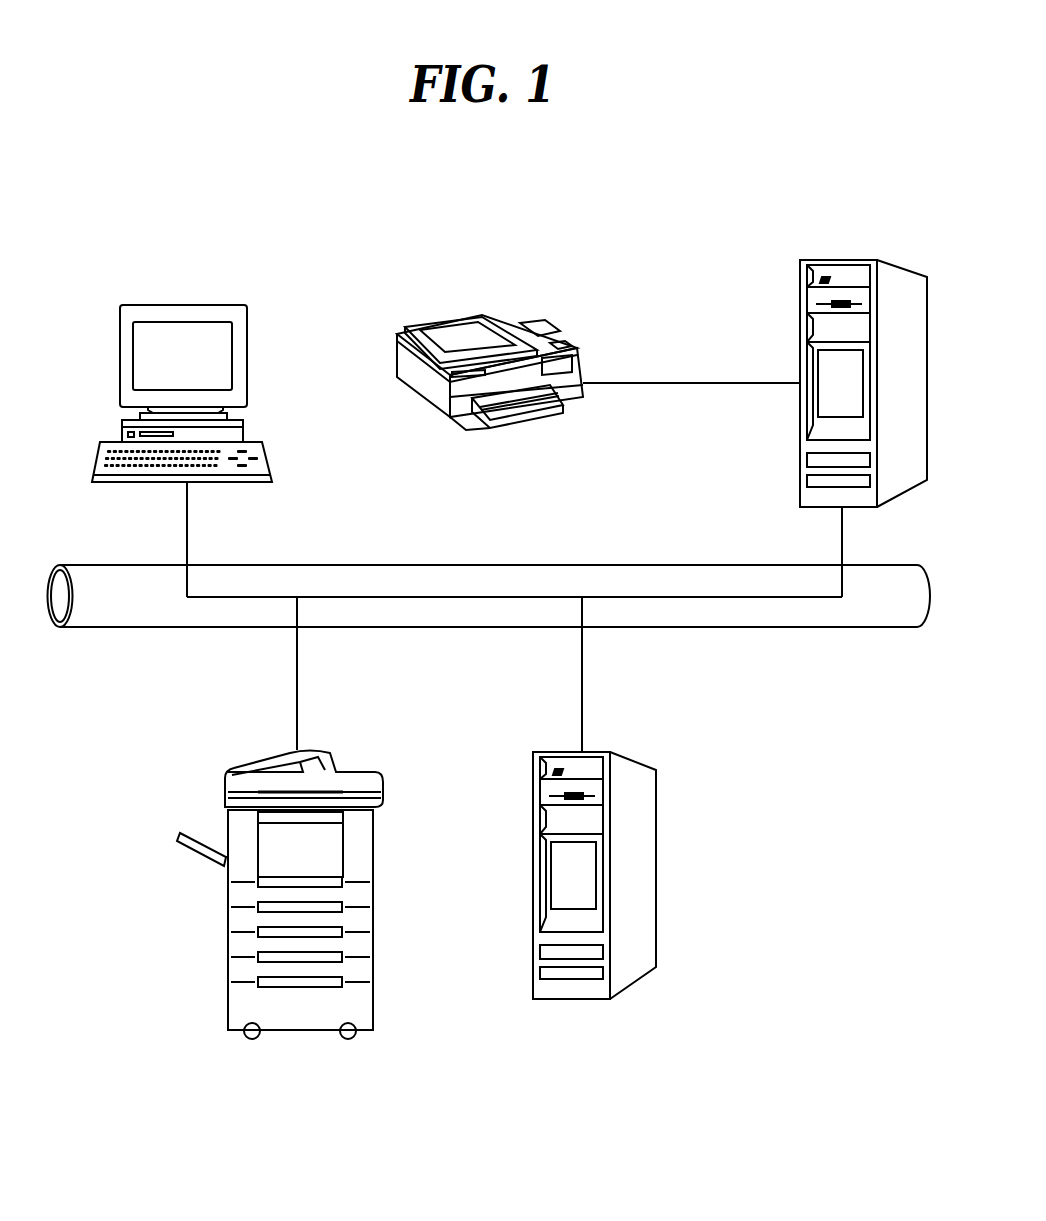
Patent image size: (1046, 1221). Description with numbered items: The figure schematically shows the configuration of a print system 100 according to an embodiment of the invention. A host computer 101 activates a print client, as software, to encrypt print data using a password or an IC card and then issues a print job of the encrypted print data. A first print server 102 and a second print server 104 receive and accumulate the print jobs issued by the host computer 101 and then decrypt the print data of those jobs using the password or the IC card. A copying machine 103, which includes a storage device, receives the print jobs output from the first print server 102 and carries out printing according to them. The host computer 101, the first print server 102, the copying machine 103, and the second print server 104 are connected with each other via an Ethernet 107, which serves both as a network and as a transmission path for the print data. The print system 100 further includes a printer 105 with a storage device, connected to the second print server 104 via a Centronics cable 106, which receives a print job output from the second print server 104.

The print system 100 is at (228, 192).
The host computer 101 is at (247, 352).
The print server A 102 is at (633, 760).
The copying machine 103 is at (360, 770).
The print server B 104 is at (800, 302).
The printer 105 is at (523, 428).
The Centronics cable 106 is at (690, 383).
The Ethernet 107 is at (738, 627).